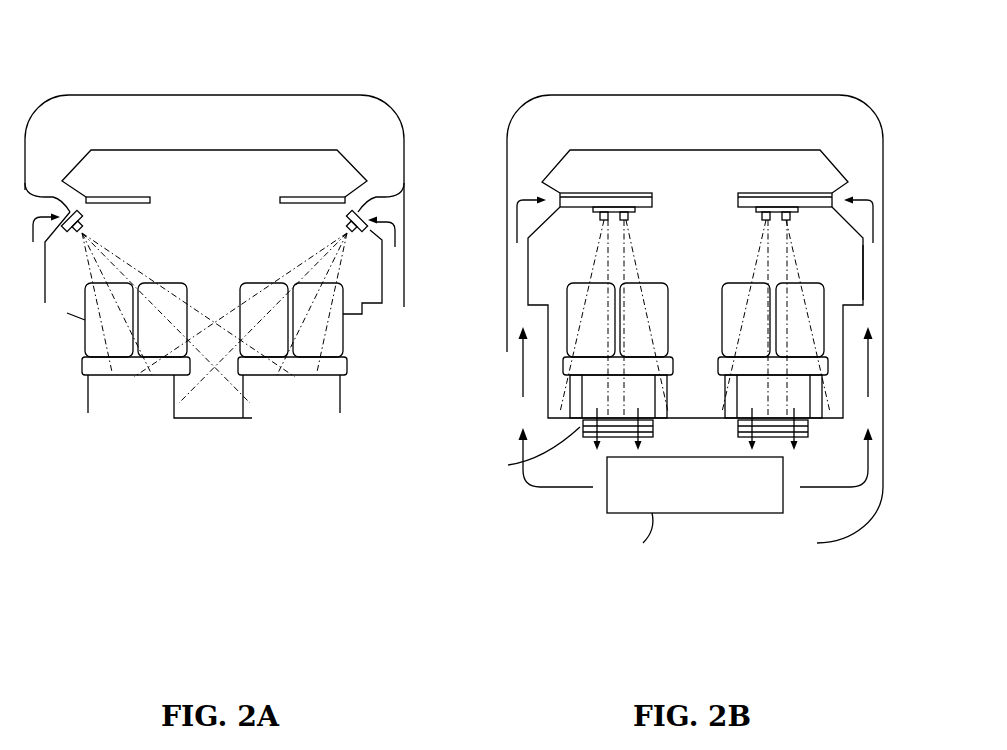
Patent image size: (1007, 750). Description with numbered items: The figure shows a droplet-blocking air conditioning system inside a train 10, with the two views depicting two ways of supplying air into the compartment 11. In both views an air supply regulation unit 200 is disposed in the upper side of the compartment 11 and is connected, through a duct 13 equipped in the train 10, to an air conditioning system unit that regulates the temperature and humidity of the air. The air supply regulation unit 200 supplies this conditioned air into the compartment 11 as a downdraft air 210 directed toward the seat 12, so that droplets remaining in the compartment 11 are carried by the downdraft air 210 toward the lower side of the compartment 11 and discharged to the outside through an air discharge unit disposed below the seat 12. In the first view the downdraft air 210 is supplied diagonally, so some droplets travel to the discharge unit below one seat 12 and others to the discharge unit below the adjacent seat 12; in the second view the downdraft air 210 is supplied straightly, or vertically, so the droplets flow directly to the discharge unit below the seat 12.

In FIG. 2A, the train 10 is at (268, 95).
In FIG. 2B, the train 10 is at (696, 95).
In FIG. 2B, the compartment 11 is at (866, 270).
In FIG. 2B, the seat 12 is at (567, 347).
In FIG. 2B, the duct 13 is at (790, 197).
In FIG. 2A, the air supply regulation unit 200 is at (360, 212).
In FIG. 2B, the air supply regulation unit 200 is at (619, 201).
In FIG. 2A, the downdraft air 210 is at (134, 241).
In FIG. 2B, the downdraft air 210 is at (570, 266).